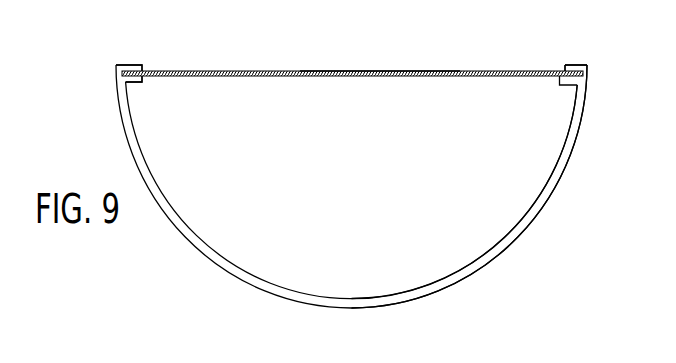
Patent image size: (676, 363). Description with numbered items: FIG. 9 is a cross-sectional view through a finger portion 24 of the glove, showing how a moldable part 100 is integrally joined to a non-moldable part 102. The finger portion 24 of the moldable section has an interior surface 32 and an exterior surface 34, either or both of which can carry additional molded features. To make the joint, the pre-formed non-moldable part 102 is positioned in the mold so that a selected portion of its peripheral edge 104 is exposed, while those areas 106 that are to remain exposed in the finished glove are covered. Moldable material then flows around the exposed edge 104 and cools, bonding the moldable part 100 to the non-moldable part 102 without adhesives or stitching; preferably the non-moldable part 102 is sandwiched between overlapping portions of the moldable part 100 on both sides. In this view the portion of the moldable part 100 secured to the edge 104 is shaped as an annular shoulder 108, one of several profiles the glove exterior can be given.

The finger portion 24 is at (200, 275).
The interior surface 32 is at (499, 243).
The exterior surface 34 is at (463, 281).
The moldable part 100 is at (279, 281).
The non-moldable part 102 is at (312, 70).
The peripheral edge 104 is at (149, 72).
The exposed area 106 is at (383, 70).
The annular shoulder 108 is at (148, 83).